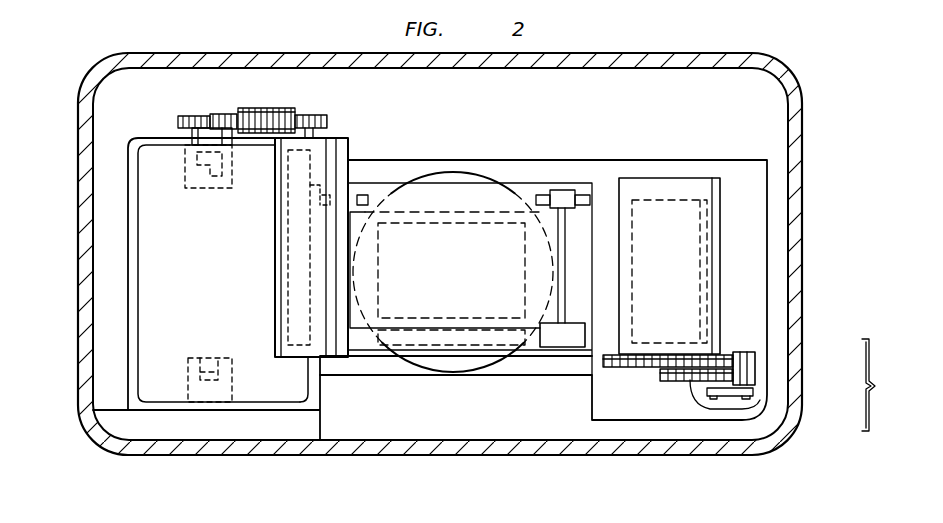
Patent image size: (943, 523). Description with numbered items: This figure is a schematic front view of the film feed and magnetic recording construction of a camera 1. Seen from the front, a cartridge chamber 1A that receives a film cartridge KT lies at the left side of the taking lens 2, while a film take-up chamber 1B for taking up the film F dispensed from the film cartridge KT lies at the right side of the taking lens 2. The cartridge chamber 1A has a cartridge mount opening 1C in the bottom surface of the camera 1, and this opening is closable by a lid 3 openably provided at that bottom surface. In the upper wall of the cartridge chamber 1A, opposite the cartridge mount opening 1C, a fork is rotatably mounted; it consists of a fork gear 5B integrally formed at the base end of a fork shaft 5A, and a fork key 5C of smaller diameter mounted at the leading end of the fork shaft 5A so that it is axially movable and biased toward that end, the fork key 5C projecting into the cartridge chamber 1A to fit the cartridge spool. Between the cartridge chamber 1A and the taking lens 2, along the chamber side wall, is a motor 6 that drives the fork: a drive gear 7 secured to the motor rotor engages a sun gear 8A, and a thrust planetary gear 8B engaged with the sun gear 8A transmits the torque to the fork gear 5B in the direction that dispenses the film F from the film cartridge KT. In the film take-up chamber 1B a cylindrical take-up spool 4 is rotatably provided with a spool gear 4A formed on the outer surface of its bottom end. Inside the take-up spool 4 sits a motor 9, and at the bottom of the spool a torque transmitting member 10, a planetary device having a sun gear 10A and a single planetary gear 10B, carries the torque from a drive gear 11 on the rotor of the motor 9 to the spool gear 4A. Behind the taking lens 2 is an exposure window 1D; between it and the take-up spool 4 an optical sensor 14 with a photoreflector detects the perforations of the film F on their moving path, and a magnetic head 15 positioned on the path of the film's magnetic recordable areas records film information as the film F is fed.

The camera 1 is at (800, 192).
The cartridge chamber 1A is at (128, 276).
The film take-up chamber 1B is at (703, 165).
The cartridge mount opening 1C is at (172, 394).
The exposure window 1D is at (485, 212).
The taking lens 2 is at (446, 171).
The lid 3 is at (238, 428).
The take-up spool 4 is at (717, 273).
The spool gear 4A is at (636, 367).
The fork shaft 5A is at (192, 131).
The fork gear 5B is at (182, 120).
The fork key 5C is at (215, 181).
The motor 6 is at (348, 142).
The drive gear 7 is at (330, 117).
The sun gear 8A is at (241, 109).
The thrust planetary gear 8B is at (233, 115).
The motor 9 is at (710, 230).
The torque transmitting member 10 is at (881, 385).
The sun gear 10A is at (760, 402).
The planetary gear 10B is at (756, 361).
The drive gear 11 is at (672, 383).
The optical sensor 14 is at (565, 197).
The magnetic head 15 is at (562, 341).
The film F is at (528, 188).
The film cartridge KT is at (153, 225).